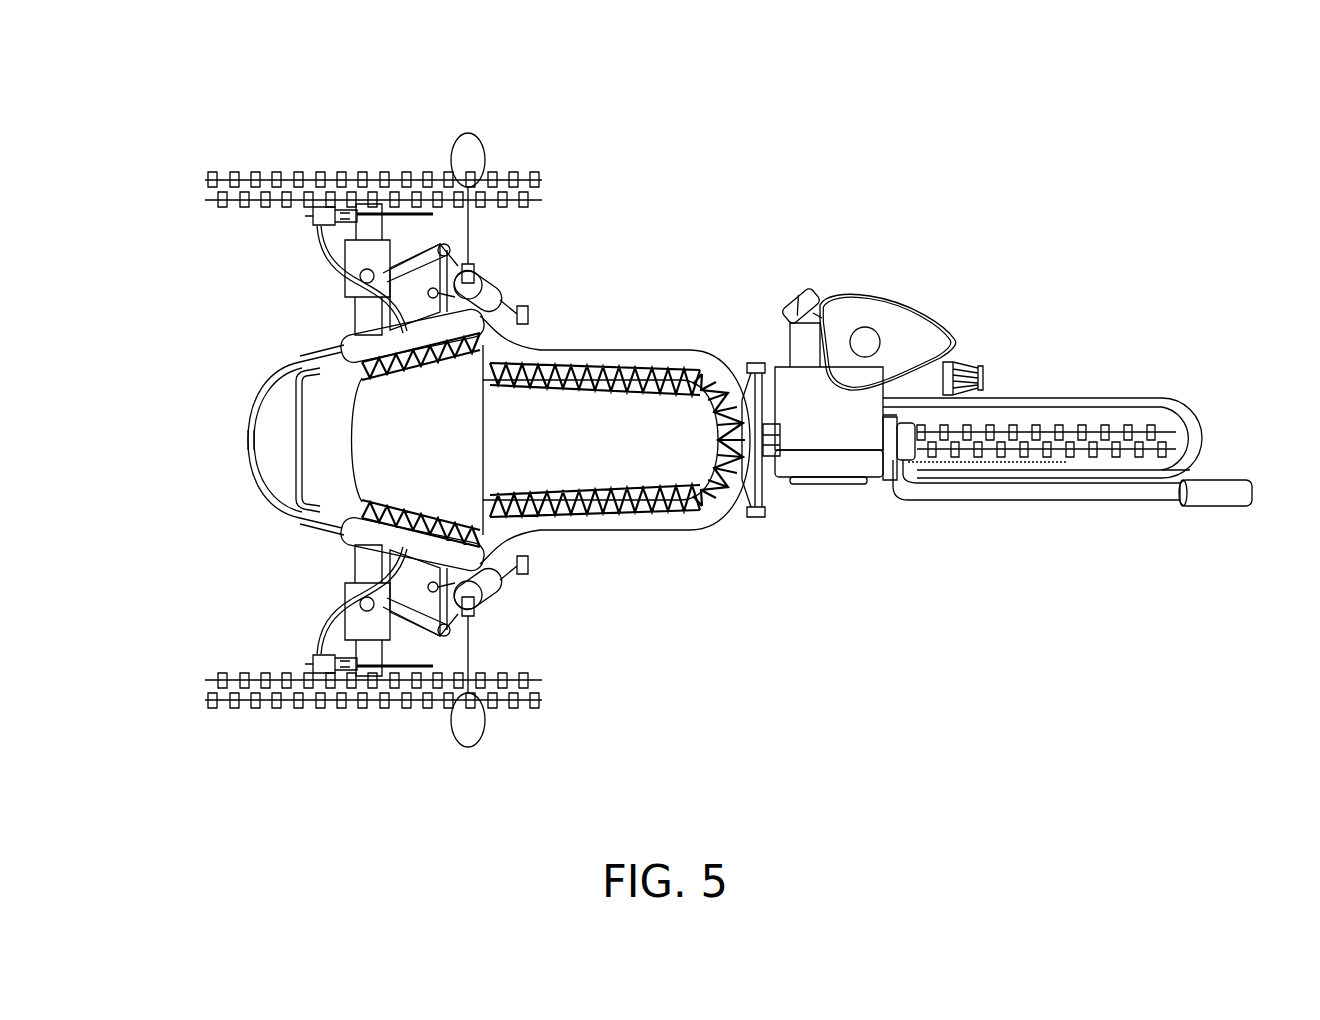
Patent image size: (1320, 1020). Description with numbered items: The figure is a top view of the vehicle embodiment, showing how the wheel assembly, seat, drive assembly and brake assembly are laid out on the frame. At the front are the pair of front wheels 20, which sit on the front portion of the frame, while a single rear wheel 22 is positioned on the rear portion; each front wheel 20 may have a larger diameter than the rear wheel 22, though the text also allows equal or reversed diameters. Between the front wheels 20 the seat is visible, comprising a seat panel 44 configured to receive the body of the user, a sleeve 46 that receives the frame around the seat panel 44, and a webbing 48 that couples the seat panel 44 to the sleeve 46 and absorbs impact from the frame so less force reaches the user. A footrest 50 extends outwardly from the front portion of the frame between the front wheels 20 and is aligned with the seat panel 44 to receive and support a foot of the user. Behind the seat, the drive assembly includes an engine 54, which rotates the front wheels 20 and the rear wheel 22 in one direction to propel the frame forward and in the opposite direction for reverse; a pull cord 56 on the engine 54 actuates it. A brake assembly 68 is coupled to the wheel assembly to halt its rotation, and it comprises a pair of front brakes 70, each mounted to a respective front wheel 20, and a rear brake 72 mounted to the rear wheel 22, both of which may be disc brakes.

The pair of front wheels 20 is at (208, 182).
The rear wheel 22 is at (1158, 420).
The seat panel 44 is at (662, 440).
The sleeve 46 is at (615, 348).
The webbing 48 is at (612, 512).
The footrest 50 is at (290, 515).
The engine 54 is at (970, 357).
The pull cord 56 is at (797, 292).
The brake assembly 68 is at (978, 503).
The pair of front brakes 70 is at (400, 214).
The rear brake 72 is at (1048, 462).